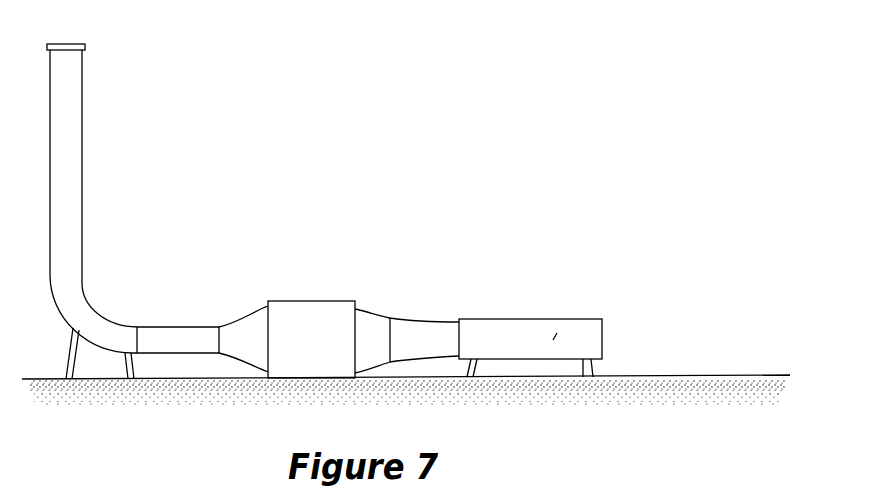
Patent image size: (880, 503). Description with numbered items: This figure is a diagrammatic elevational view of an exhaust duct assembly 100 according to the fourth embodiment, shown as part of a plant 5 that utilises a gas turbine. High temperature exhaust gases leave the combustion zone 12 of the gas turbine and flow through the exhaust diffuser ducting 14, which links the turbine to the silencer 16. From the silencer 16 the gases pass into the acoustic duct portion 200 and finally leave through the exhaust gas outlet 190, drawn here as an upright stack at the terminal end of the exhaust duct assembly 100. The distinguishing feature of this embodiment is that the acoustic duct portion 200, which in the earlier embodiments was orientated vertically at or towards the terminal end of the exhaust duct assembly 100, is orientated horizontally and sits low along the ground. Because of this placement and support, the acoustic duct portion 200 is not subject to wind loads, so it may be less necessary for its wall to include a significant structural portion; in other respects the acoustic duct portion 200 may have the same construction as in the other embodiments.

The plant 5 is at (668, 185).
The exhaust duct assembly 100 is at (197, 205).
The combustion zone 12 is at (557, 333).
The exhaust diffuser ducting 14 is at (428, 318).
The silencer 16 is at (309, 321).
The exhaust gas outlet 190 is at (68, 45).
The acoustic duct portion 200 is at (177, 327).